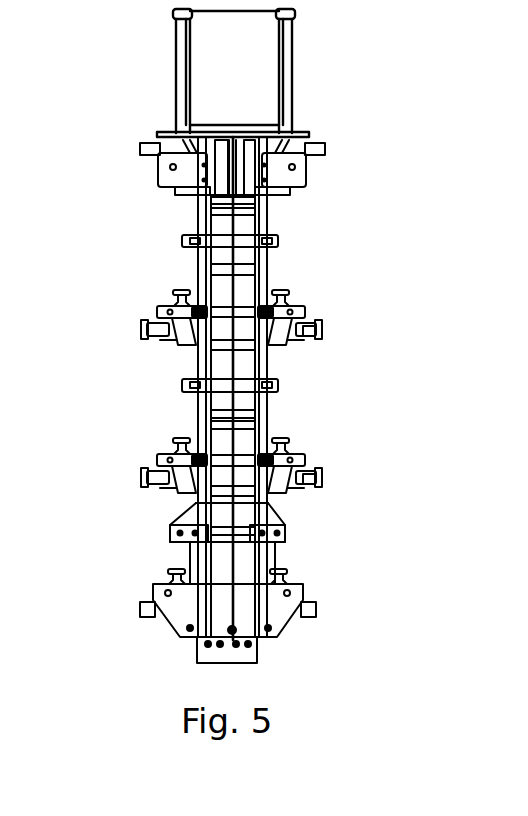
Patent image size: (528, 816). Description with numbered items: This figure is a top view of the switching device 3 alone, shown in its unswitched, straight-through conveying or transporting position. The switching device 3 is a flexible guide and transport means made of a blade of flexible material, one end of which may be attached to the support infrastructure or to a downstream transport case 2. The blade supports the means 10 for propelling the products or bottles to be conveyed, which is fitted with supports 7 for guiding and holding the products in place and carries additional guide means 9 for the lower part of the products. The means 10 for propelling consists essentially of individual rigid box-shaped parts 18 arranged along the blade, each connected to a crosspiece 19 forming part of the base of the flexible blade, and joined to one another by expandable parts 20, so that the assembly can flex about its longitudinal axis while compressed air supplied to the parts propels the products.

The downstream transport case 2 is at (265, 88).
The switching device 3 is at (315, 333).
The supports 7 is at (189, 391).
The additional guide means 9 is at (267, 562).
The means for propelling the products 10 is at (286, 261).
The individual rigid box-shaped parts 18 is at (243, 394).
The crosspiece 19 is at (275, 232).
The expandable parts 20 is at (310, 490).